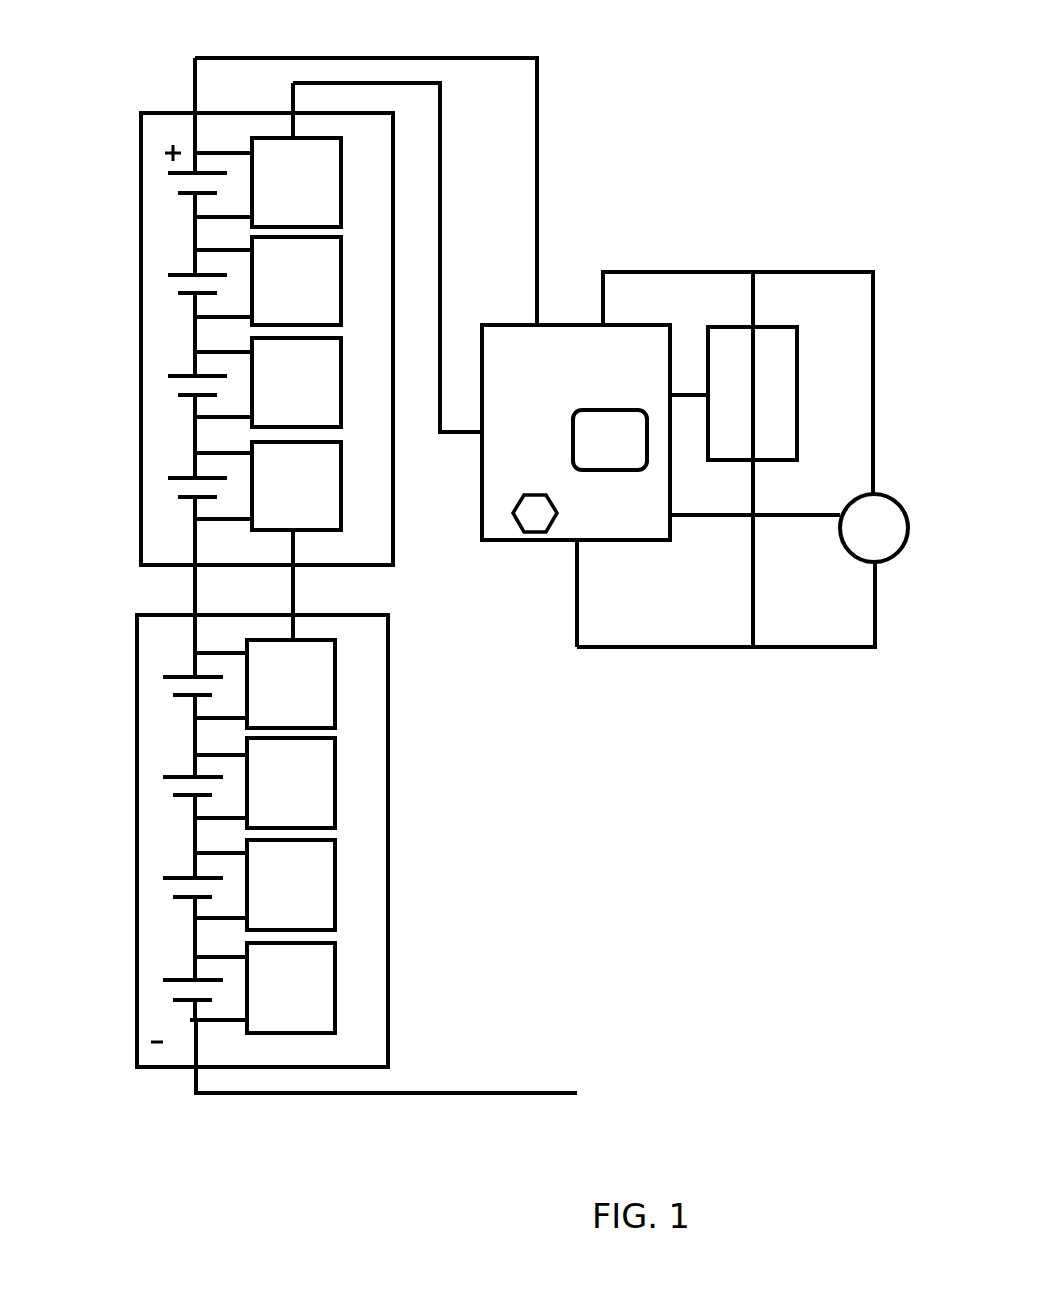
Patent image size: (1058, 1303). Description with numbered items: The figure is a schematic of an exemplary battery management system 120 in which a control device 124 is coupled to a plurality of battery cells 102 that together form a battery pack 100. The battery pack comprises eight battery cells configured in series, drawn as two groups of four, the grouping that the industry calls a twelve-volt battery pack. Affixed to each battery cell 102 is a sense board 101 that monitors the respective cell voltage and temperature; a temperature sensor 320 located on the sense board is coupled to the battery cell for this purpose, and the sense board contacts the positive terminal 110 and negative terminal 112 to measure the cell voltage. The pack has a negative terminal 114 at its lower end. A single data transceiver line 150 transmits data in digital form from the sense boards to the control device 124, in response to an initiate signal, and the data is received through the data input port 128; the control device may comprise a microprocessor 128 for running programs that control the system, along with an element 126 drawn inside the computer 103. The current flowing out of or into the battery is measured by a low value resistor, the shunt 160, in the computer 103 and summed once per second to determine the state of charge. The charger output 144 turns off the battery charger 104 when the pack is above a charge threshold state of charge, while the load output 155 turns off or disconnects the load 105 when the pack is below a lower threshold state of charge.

The battery pack 100 is at (193, 248).
The sense board 101 is at (323, 207).
The battery cell 102 is at (168, 173).
The computer 103 is at (555, 412).
The battery charger 104 is at (753, 370).
The load 105 is at (880, 518).
The positive terminal 110 is at (168, 376).
The negative terminal 112 is at (180, 394).
The negative terminal 114 is at (222, 1023).
The battery management system 120 is at (622, 233).
The control device 124 is at (575, 515).
The controller 126 is at (528, 520).
The data input port 128 is at (538, 323).
The charger output 144 is at (670, 397).
The data transceiver line 150 is at (445, 147).
The load output 155 is at (670, 514).
The shunt 160 is at (637, 451).
The temperature sensor 320 is at (317, 307).